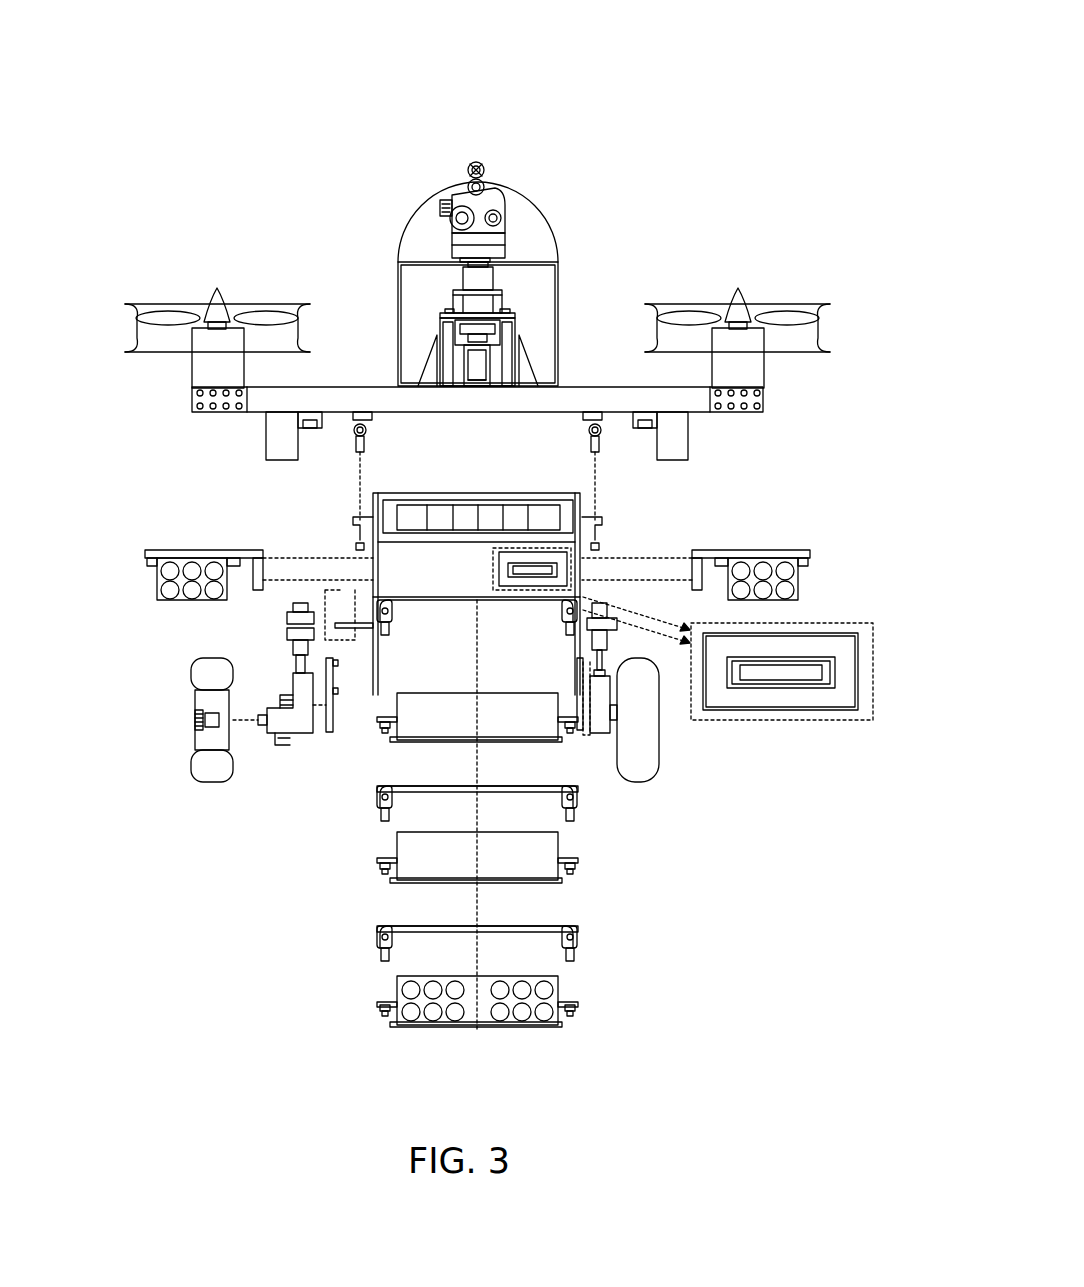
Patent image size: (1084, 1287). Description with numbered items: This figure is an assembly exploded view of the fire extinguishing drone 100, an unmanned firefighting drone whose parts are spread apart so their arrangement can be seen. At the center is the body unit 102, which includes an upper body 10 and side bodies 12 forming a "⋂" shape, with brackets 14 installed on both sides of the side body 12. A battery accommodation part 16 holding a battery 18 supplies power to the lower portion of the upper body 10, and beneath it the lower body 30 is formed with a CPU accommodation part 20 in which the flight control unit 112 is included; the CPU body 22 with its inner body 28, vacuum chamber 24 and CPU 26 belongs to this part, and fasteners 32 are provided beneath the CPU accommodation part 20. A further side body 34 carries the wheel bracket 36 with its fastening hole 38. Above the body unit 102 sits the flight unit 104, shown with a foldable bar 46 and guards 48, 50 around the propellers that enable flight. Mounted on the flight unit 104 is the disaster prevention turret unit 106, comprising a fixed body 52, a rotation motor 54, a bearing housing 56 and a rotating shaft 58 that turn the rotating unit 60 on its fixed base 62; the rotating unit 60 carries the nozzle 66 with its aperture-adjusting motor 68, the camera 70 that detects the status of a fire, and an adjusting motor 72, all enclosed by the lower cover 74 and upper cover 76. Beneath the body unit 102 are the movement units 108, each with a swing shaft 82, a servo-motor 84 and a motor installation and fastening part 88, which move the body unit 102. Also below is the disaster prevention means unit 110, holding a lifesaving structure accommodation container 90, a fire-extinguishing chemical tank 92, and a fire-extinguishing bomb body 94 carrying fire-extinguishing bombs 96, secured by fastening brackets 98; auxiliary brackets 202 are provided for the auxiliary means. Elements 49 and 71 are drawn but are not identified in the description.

The fire extinguishing drone 100 is at (730, 105).
The upper body 10 is at (485, 495).
The side body 12 is at (598, 500).
The bracket 14 is at (358, 520).
The battery accommodation part 16 is at (442, 500).
The battery 18 is at (400, 500).
The CPU accommodation part 20 is at (430, 580).
The CPU body 22 is at (520, 595).
The vacuum chamber 24 is at (856, 700).
The CPU 26 is at (800, 700).
The inner body 28 is at (832, 666).
The lower body 30 is at (510, 605).
The fasteners 32 is at (357, 447).
The side body 34 is at (375, 700).
The wheel bracket 36 is at (330, 600).
The fastening hole 38 is at (356, 615).
The foldable bar 46 is at (700, 395).
The guard 48 is at (200, 316).
The motor 49 is at (200, 368).
The guard 50 is at (134, 332).
The fixed body 52 is at (440, 330).
The rotation motor 54 is at (486, 360).
The bearing housing 56 is at (500, 300).
The rotating shaft 58 is at (486, 280).
The rotating unit 60 is at (505, 238).
The fixed base 62 is at (505, 190).
The nozzle 66 is at (483, 180).
The aperture-adjusting motor 68 is at (472, 166).
The camera 70 is at (440, 222).
The secondary lens 71 is at (500, 214).
The adjusting motor 72 is at (440, 200).
The lower cover 74 is at (395, 295).
The upper cover 76 is at (396, 236).
The swing shaft 82 is at (270, 750).
The servo-motor 84 is at (195, 700).
The motor installation and fastening part 88 is at (212, 755).
The lifesaving structure accommodation container 90 is at (430, 700).
The fire-extinguishing chemical tank 92 is at (540, 877).
The fire-extinguishing bomb body 94 is at (170, 580).
The fire-extinguishing bomb 96 is at (170, 592).
The fastening bracket 98 is at (545, 740).
The body unit 102 is at (614, 505).
The flight unit 104 is at (250, 418).
The disaster prevention turret unit 106 is at (573, 238).
The movement unit 108 is at (270, 785).
The disaster prevention means unit 110 is at (330, 915).
The flight control unit 112 is at (857, 733).
The auxiliary bracket 202 is at (165, 550).